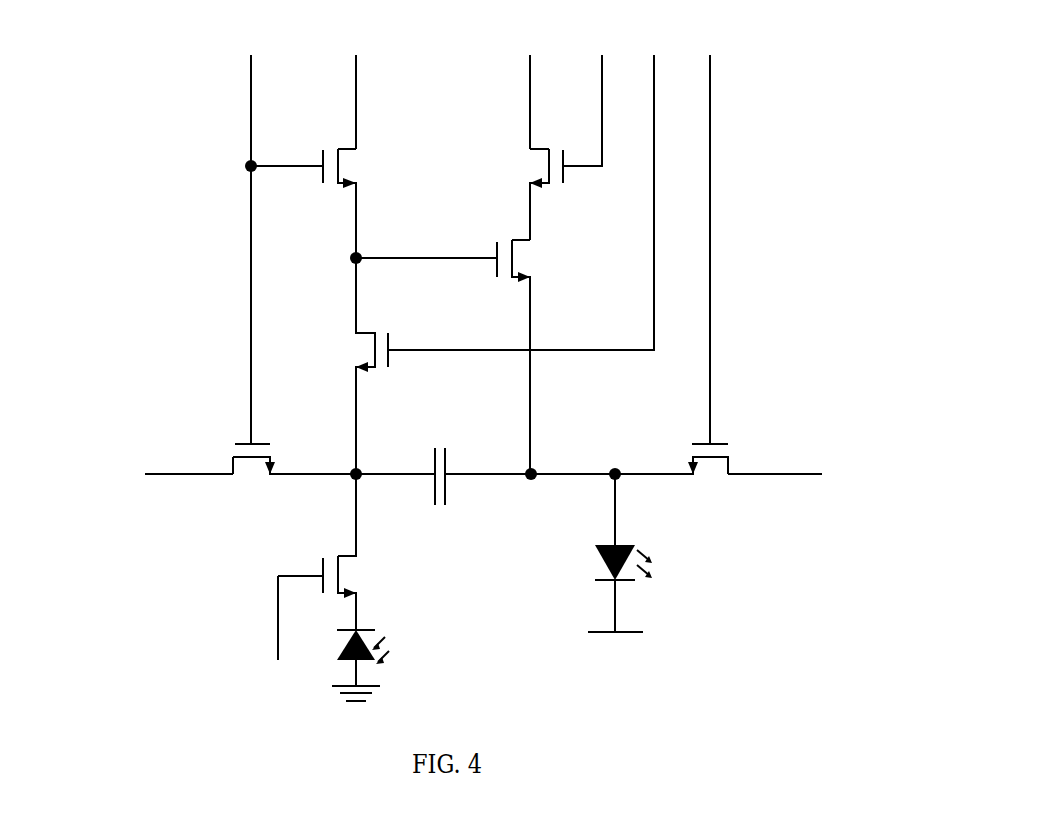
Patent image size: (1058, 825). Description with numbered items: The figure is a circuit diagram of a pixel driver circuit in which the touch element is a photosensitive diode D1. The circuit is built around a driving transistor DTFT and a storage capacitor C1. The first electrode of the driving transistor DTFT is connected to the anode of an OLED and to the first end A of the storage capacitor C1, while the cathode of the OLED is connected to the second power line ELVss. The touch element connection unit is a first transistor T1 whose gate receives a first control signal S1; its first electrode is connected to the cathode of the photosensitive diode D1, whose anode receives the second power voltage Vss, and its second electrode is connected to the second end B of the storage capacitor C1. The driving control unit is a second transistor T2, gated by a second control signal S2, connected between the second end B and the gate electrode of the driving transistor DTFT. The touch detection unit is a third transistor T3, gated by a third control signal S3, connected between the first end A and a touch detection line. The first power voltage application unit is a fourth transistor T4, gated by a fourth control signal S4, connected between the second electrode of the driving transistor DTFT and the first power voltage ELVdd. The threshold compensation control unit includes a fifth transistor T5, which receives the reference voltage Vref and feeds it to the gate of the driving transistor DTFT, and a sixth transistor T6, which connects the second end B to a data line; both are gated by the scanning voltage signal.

The first transistor T1 is at (336, 552).
The second transistor T2 is at (350, 366).
The third transistor T3 is at (672, 481).
The fourth transistor T4 is at (525, 194).
The fifth transistor T5 is at (324, 203).
The sixth transistor T6 is at (294, 478).
The driving transistor DTFT is at (477, 357).
The storage capacitor C1 is at (485, 491).
The photosensitive diode D1 is at (375, 650).
The element OLED is at (592, 550).
The first end of the storage capacitor A is at (541, 462).
The second end of the storage capacitor B is at (366, 462).
The reference voltage Vref is at (353, 86).
The first power voltage ELVdd is at (526, 88).
The second power line ELVss is at (660, 633).
The second power voltage Vss is at (378, 699).
The first control signal S1 is at (276, 634).
The second control signal S2 is at (528, 188).
The third control signal S3 is at (706, 235).
The fourth control signal S4 is at (587, 96).